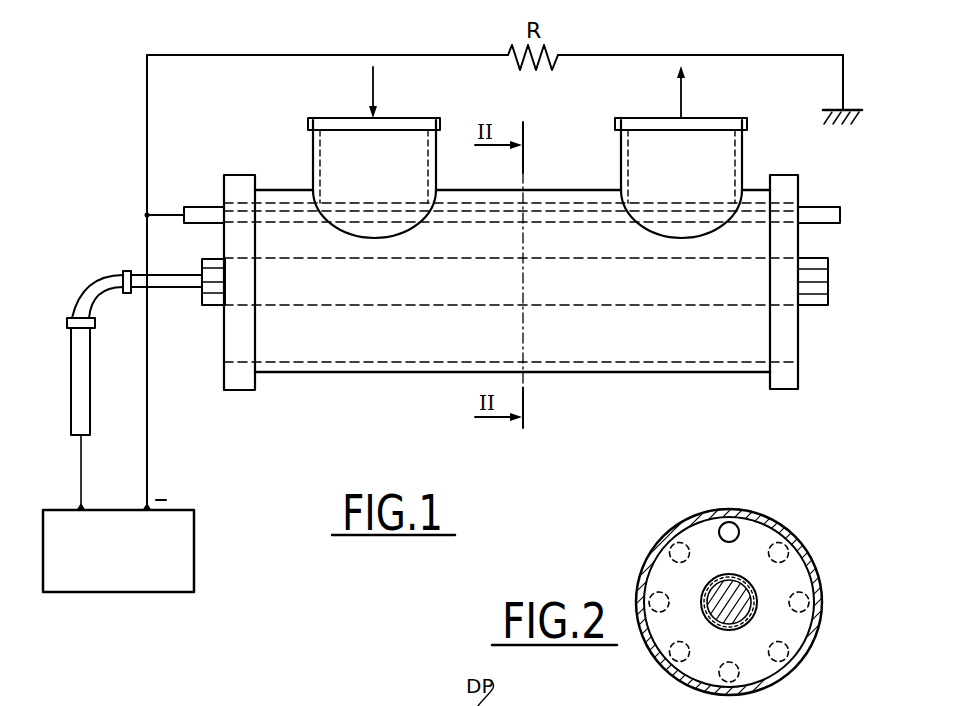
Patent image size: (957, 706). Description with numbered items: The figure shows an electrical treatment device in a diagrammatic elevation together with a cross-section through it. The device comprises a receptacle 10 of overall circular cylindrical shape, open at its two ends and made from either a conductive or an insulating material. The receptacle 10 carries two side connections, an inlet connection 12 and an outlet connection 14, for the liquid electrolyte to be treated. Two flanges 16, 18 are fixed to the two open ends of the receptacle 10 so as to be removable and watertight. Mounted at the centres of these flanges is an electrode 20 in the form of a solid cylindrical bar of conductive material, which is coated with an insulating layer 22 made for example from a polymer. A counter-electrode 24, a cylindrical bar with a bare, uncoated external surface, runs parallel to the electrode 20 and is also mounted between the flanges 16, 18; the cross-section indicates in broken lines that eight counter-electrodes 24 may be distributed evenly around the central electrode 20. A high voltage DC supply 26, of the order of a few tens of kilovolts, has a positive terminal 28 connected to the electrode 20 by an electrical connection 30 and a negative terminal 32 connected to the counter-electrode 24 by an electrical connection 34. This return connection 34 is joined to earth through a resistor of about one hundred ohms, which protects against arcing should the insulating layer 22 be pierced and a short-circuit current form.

In FIG. 1, the receptacle 10 is at (380, 372).
In FIG. 2, the receptacle 10 is at (805, 648).
In FIG. 1, the inlet connection 12 is at (318, 160).
In FIG. 1, the outlet connection 14 is at (738, 165).
In FIG. 1, the flange 16 is at (240, 384).
In FIG. 1, the flange 18 is at (785, 385).
In FIG. 1, the electrode 20 is at (418, 288).
In FIG. 2, the electrode 20 is at (752, 589).
In FIG. 2, the insulating layer 22 is at (749, 583).
In FIG. 1, the counter-electrode 24 is at (468, 222).
In FIG. 2, the counter-electrode 24 is at (742, 522).
In FIG. 1, the high voltage DC supply 26 is at (116, 580).
In FIG. 1, the positive terminal 28 is at (75, 509).
In FIG. 1, the electrical connection 30 is at (88, 291).
In FIG. 1, the negative terminal 32 is at (150, 509).
In FIG. 1, the electrical connection 34 is at (147, 343).